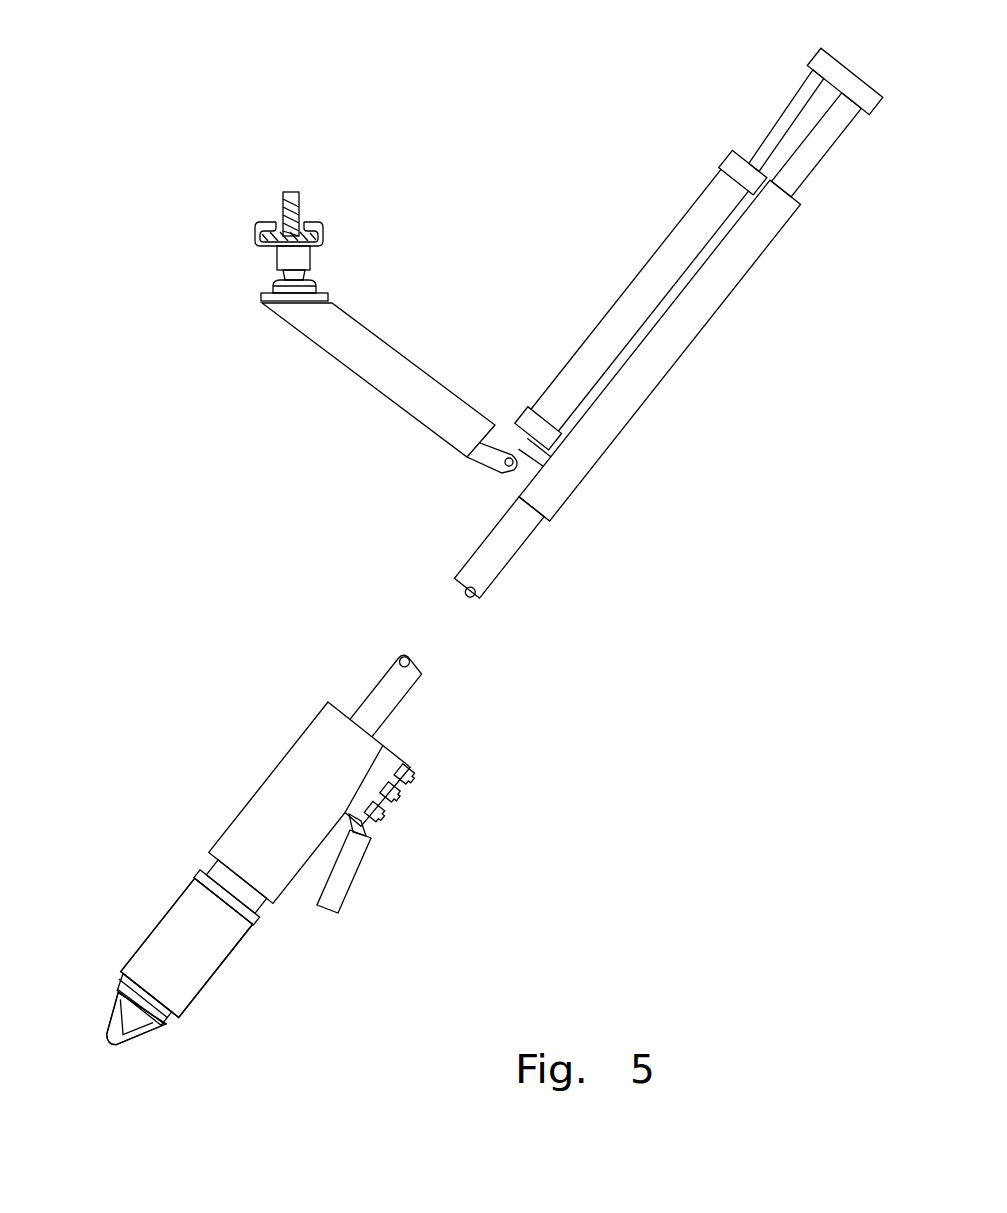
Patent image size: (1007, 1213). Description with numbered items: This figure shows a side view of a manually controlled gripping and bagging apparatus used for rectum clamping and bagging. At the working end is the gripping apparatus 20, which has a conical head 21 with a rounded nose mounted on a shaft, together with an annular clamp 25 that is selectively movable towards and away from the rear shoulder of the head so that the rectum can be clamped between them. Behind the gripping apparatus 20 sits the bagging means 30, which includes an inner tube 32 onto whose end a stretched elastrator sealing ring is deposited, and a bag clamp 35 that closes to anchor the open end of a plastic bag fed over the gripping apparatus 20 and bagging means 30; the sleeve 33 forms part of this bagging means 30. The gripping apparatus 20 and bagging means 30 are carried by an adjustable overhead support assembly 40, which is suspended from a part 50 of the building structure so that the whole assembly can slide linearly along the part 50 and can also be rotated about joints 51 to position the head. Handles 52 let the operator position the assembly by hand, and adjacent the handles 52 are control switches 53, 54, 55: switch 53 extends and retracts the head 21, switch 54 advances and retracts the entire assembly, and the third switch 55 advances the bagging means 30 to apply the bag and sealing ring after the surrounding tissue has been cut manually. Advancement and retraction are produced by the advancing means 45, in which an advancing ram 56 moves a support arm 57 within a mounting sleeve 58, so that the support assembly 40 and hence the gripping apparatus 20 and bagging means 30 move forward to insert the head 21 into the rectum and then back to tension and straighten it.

The gripping apparatus 20 is at (102, 1008).
The conical head 21 is at (135, 1025).
The annular clamp 25 is at (153, 1022).
The bagging means 30 is at (172, 898).
The inner tube 32 is at (120, 982).
The housing sleeve 33 is at (190, 970).
The bag clamp 35 is at (232, 907).
The overhead support assembly 40 is at (262, 770).
The advancing means 45 is at (618, 468).
The part of the building structure 50 is at (283, 203).
The joints 51 is at (490, 472).
The handles 52 is at (350, 857).
The control switch 53 is at (377, 818).
The control switch 54 is at (395, 797).
The third switch 55 is at (412, 772).
The advancing ram 56 is at (772, 133).
The support arm 57 is at (493, 548).
The mounting sleeve 58 is at (663, 360).